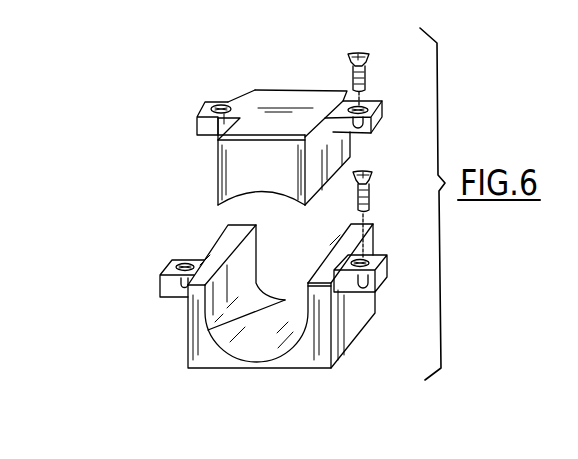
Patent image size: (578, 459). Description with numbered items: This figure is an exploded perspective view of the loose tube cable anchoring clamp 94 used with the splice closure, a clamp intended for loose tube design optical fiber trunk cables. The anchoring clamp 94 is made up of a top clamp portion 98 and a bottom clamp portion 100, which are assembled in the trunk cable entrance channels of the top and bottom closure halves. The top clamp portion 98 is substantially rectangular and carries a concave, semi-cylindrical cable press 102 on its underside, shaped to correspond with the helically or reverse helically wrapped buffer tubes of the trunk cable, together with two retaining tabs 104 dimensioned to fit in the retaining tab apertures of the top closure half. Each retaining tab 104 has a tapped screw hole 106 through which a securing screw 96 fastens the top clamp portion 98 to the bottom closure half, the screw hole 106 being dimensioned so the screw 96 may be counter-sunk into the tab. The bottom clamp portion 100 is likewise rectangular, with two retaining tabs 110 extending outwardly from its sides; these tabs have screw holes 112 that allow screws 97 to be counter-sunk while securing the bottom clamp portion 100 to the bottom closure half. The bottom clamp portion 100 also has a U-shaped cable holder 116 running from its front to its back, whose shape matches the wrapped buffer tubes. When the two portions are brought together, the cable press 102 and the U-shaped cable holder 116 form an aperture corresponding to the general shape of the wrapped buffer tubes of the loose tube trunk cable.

The loose tube cable anchoring clamp 94 is at (183, 215).
The securing screw 96 is at (358, 55).
The screw 97 is at (372, 173).
The top clamp portion 98 is at (305, 100).
The bottom clamp portion 100 is at (338, 344).
The cable press 102 is at (272, 194).
The retaining tab 104 is at (197, 127).
The screw hole 106 is at (222, 106).
The retaining tab 110 is at (158, 285).
The screw hole 112 is at (385, 311).
The U-shaped cable holder 116 is at (265, 300).